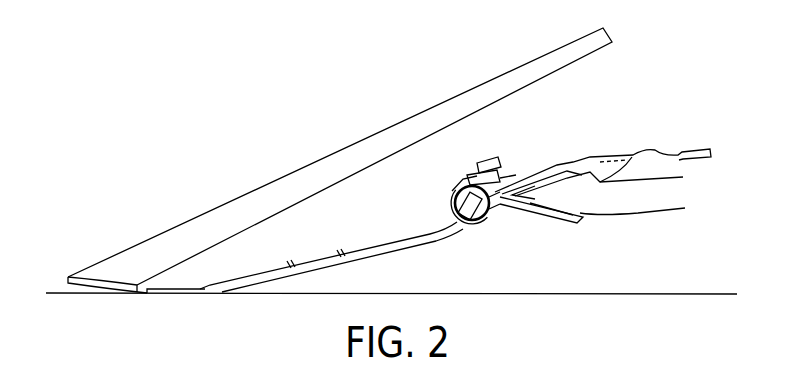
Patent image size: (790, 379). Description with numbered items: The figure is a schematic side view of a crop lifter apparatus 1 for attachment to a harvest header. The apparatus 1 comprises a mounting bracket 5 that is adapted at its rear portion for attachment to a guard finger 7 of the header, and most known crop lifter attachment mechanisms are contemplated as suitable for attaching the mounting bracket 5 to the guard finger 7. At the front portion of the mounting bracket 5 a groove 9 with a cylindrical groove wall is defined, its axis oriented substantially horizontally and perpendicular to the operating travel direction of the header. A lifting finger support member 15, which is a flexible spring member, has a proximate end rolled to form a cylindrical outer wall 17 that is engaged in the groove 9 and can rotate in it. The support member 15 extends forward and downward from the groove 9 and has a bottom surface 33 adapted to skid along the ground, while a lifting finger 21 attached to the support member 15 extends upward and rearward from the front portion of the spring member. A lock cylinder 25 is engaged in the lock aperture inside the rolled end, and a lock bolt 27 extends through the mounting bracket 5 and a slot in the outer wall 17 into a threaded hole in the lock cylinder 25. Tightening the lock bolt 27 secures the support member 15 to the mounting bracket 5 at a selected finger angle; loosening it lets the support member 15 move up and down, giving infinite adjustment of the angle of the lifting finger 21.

The crop lifter apparatus 1 is at (252, 124).
The mounting bracket 5 is at (605, 155).
The guard finger 7 is at (643, 216).
The groove 9 is at (462, 180).
The lifting finger support member 15 is at (380, 247).
The cylindrical outer wall 17 is at (497, 212).
The lifting finger 21 is at (211, 213).
The lock cylinder 25 is at (481, 217).
The lock bolt 27 is at (491, 160).
The bottom surface 33 is at (170, 295).